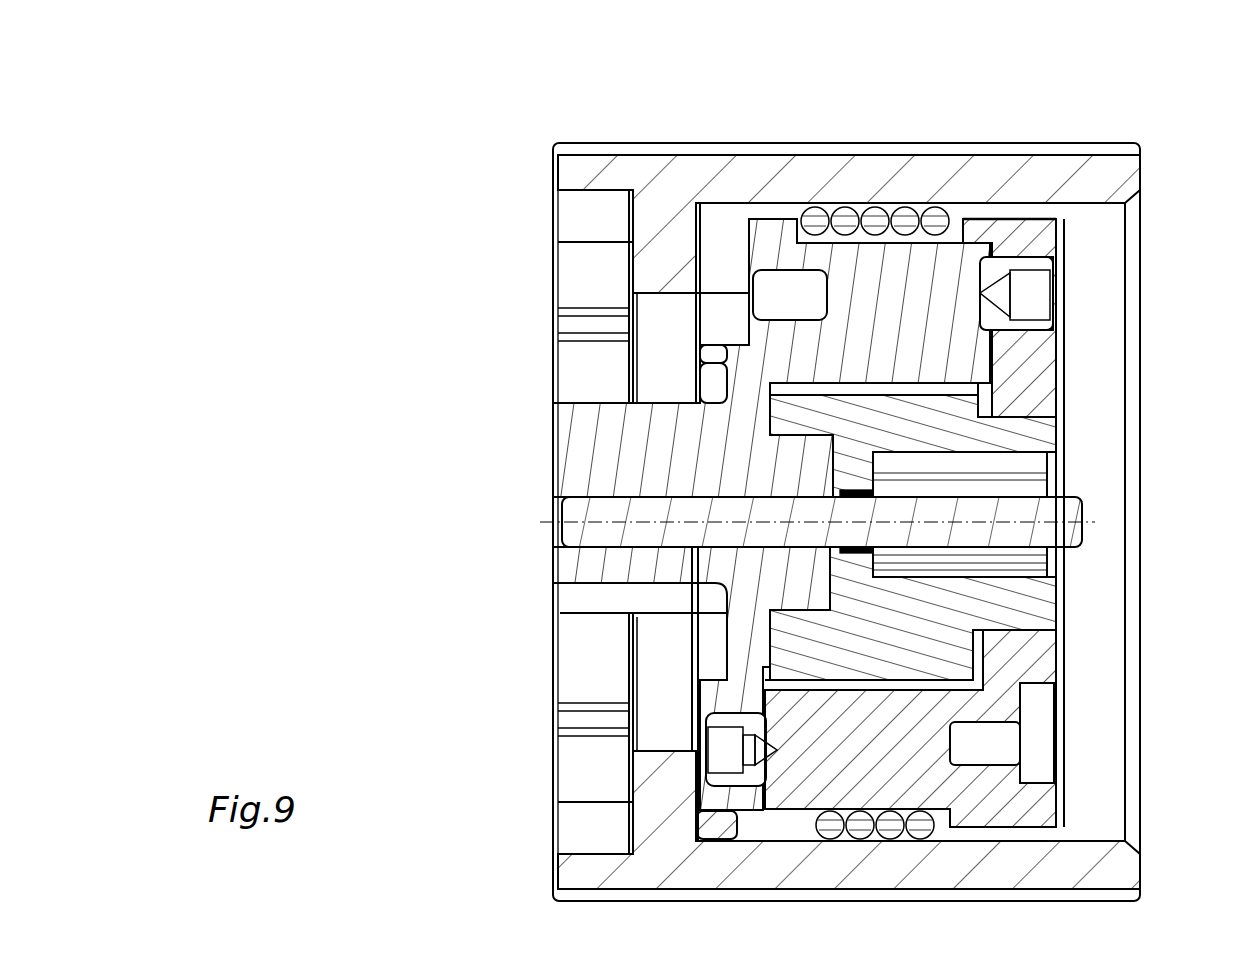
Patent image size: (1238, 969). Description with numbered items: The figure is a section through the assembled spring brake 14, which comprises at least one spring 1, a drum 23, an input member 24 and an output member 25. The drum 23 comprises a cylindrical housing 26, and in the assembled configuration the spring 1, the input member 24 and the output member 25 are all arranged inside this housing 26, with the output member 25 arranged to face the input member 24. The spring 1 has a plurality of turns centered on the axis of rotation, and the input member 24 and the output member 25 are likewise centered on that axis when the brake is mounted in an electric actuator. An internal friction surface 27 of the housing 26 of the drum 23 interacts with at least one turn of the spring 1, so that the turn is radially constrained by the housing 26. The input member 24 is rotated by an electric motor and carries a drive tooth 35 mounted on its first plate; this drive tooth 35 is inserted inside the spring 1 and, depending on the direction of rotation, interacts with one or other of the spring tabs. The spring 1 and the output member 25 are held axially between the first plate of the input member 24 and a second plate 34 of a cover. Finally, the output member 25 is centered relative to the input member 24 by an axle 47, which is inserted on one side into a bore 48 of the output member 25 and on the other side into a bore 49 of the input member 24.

The spring 1 is at (845, 207).
The spring brake 14 is at (507, 140).
The drum 23 is at (1095, 180).
The input member 24 is at (572, 445).
The output member 25 is at (1027, 606).
The housing 26 is at (1075, 213).
The internal friction surface 27 is at (1008, 210).
The second plate 34 is at (1045, 385).
The drive tooth 35 is at (968, 338).
The axle 47 is at (1065, 513).
The bore 48 is at (853, 493).
The bore 49 is at (603, 549).